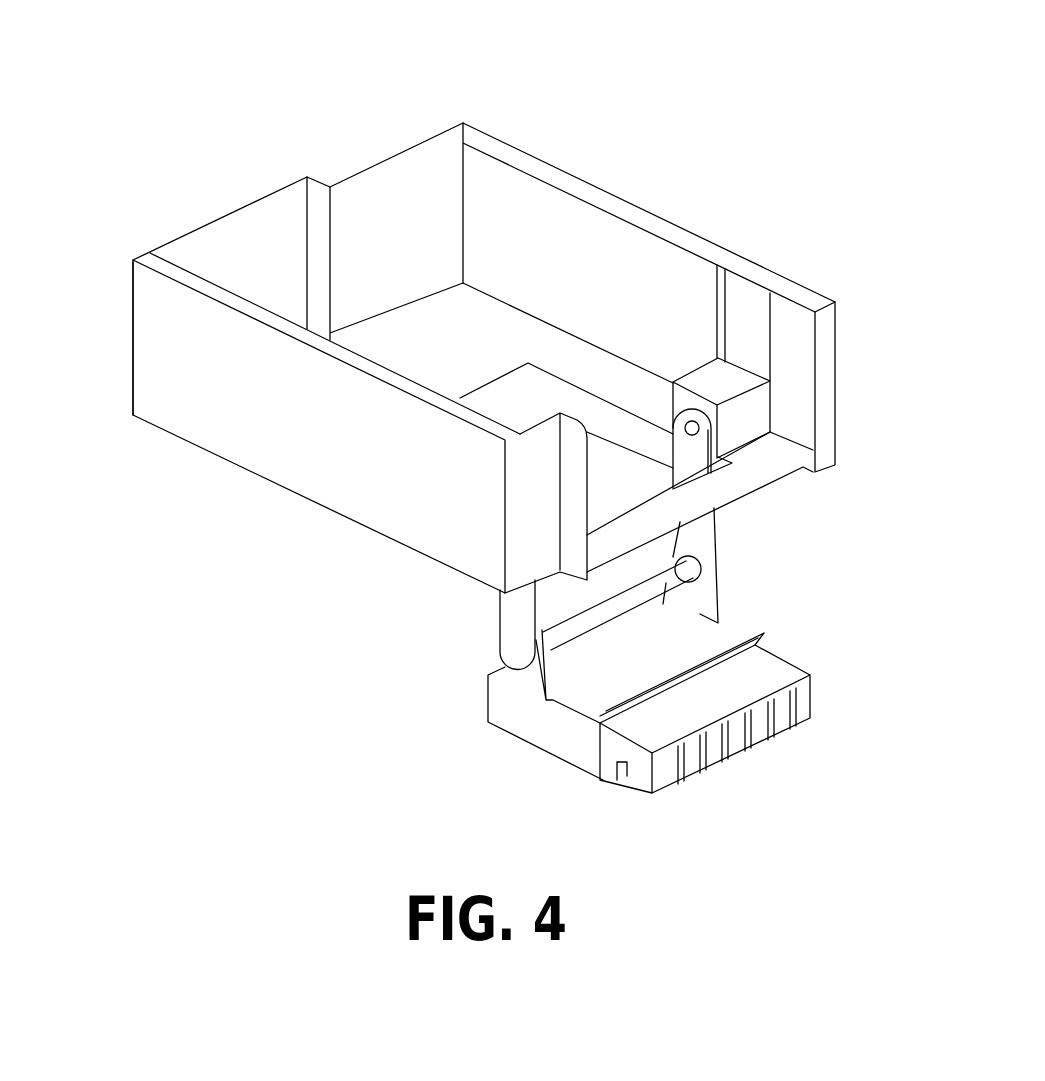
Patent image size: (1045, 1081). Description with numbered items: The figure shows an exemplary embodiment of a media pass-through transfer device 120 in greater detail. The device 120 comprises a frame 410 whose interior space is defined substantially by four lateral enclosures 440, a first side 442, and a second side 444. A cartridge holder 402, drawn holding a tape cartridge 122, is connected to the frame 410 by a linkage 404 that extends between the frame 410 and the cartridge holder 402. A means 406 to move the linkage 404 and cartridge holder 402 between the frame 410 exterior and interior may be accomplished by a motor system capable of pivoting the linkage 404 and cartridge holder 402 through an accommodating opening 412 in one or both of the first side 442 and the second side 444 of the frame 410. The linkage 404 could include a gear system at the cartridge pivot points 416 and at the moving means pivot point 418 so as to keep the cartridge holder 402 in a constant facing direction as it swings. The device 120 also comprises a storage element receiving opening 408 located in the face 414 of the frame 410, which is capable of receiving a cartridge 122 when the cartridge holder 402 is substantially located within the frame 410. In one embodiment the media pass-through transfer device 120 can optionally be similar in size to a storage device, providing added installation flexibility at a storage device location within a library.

The media pass-through transfer device 120 is at (487, 303).
The tape cartridge 122 is at (772, 735).
The cartridge holder 402 is at (550, 755).
The linkage 404 is at (715, 523).
The means to move the linkage and cartridge holder 406 is at (740, 357).
The storage element receiving opening 408 is at (679, 505).
The frame 410 is at (166, 355).
The accommodating opening 412 is at (540, 408).
The face 414 is at (815, 352).
The cartridge pivot points 416 is at (688, 594).
The moving means pivot point 418 is at (710, 435).
The lateral enclosures 440 is at (130, 383).
The first side 442 is at (532, 178).
The second side 444 is at (345, 522).